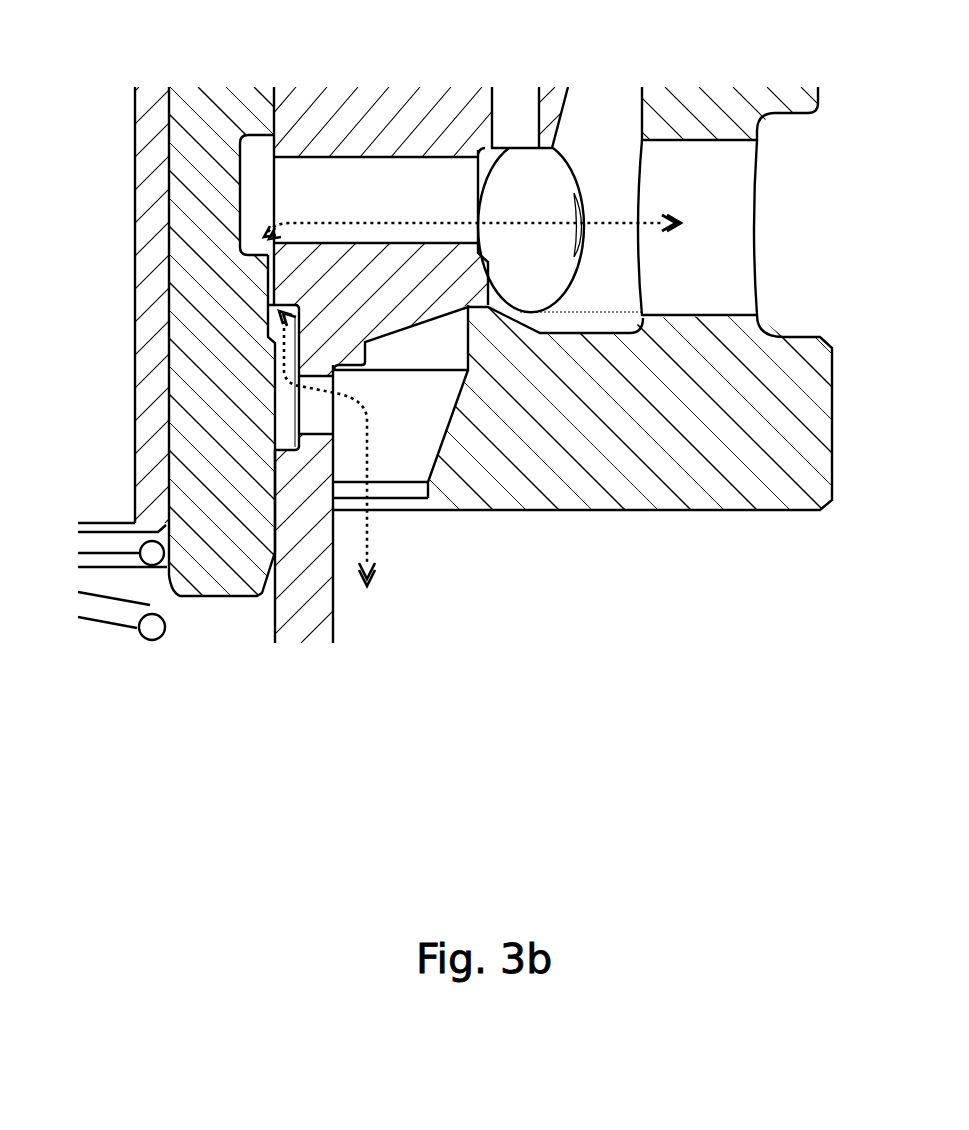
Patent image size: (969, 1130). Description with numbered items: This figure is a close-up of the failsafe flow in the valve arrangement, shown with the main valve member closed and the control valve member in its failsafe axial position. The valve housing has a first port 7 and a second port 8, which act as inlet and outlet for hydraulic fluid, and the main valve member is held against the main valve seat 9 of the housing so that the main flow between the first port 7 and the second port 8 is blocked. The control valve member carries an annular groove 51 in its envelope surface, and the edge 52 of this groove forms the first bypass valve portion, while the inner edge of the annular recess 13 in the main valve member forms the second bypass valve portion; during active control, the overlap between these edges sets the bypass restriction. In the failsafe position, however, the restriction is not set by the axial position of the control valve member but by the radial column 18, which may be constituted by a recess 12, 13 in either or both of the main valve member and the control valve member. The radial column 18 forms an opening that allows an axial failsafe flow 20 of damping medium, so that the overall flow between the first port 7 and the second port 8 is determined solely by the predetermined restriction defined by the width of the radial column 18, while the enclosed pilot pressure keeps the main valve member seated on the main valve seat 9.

The first port 7 is at (403, 525).
The second port 8 is at (797, 238).
The main valve seat 9 is at (473, 307).
The recess 12 is at (277, 295).
The annular recess 13 is at (262, 243).
The radial column 18 is at (277, 298).
The failsafe flow 20 is at (600, 222).
The annular groove 51 is at (277, 192).
The edge 52 is at (248, 131).